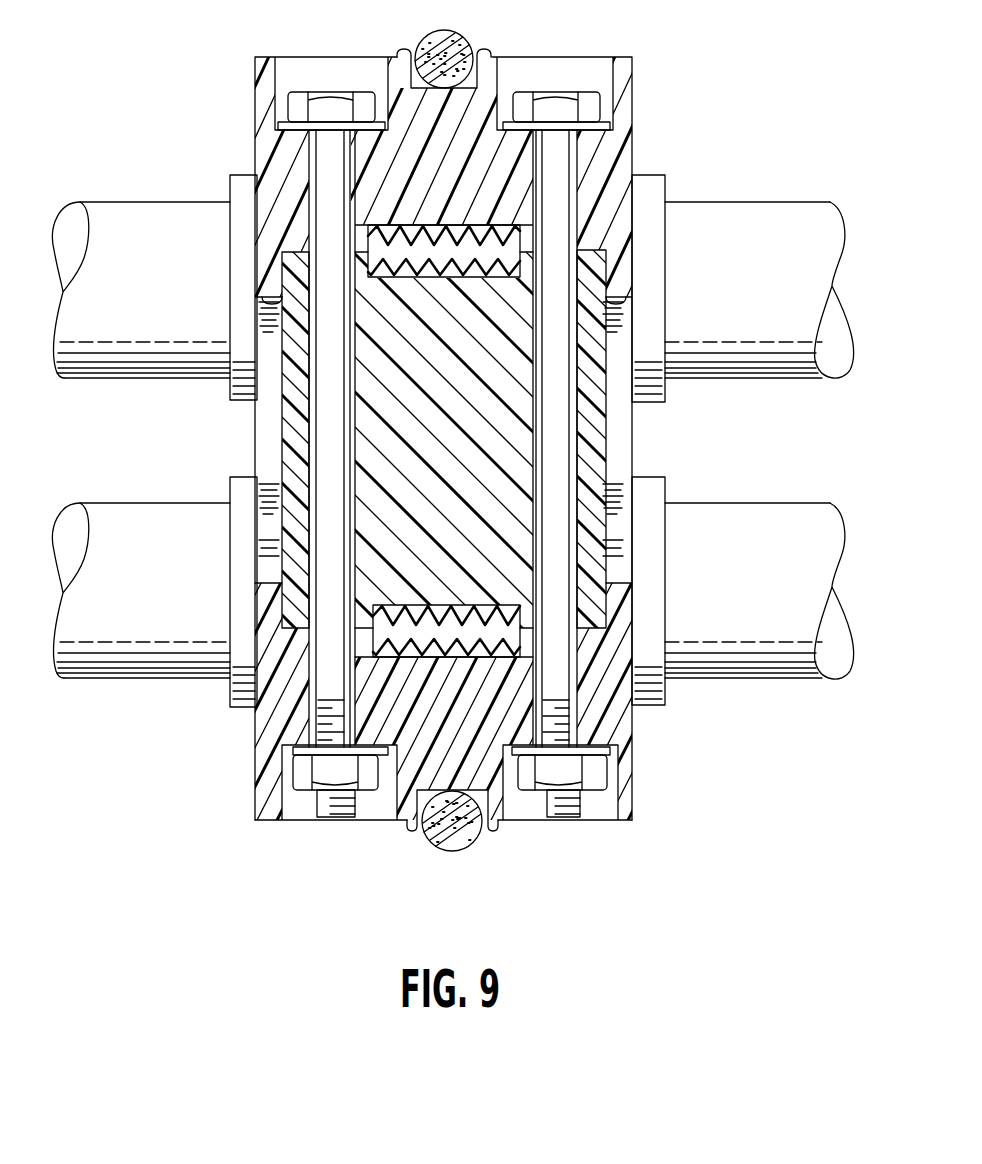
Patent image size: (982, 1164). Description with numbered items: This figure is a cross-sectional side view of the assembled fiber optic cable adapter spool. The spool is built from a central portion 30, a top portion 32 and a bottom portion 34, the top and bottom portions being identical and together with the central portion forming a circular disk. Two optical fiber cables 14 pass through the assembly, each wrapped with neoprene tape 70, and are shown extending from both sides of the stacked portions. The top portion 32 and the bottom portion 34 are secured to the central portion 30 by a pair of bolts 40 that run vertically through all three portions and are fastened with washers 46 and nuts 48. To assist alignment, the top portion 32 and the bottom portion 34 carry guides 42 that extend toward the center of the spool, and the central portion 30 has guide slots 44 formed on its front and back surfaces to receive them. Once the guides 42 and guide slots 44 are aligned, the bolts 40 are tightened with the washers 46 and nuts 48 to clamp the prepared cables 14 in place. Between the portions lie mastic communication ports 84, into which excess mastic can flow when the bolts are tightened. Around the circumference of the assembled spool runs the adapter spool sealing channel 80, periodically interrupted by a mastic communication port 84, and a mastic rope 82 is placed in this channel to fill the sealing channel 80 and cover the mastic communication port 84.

The optical fiber cable 14 is at (741, 193).
The central portion 30 is at (491, 440).
The top portion 32 is at (620, 138).
The bottom portion 34 is at (622, 715).
The bolts 40 is at (330, 100).
The guides 42 is at (265, 285).
The guide slots 44 is at (284, 404).
The washers 46 is at (293, 750).
The nuts 48 is at (305, 780).
The neoprene tape 70 is at (238, 183).
The adapter spool sealing channel 80 is at (480, 825).
The mastic rope 82 is at (435, 837).
The mastic communication ports 84 is at (458, 265).